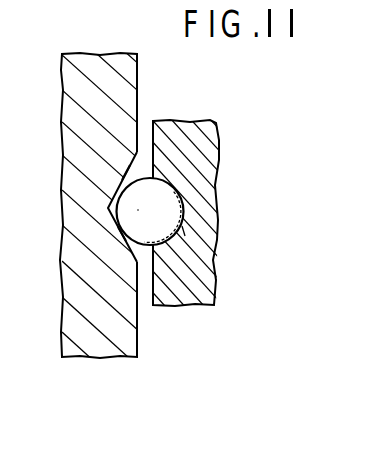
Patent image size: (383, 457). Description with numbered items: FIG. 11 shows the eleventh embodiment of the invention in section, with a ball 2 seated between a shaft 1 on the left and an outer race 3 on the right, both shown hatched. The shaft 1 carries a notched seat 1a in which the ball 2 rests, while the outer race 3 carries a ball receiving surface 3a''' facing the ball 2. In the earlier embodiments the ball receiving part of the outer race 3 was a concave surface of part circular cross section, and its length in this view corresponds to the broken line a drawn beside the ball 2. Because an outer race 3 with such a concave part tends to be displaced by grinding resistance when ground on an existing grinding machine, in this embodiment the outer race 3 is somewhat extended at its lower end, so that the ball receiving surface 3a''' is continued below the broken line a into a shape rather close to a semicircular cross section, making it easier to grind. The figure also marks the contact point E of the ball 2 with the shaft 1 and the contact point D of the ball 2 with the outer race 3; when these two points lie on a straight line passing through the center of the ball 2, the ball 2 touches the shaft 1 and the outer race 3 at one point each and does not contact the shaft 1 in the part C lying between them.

The shaft 1 is at (107, 201).
The groove of first member 1a is at (112, 224).
The ball 2 is at (138, 250).
The outer race 3 is at (189, 211).
The ball receiving surface 3a''' is at (180, 274).
The part C is at (122, 176).
The contact point D is at (181, 186).
The contact point E is at (120, 244).
The broken line a is at (182, 232).